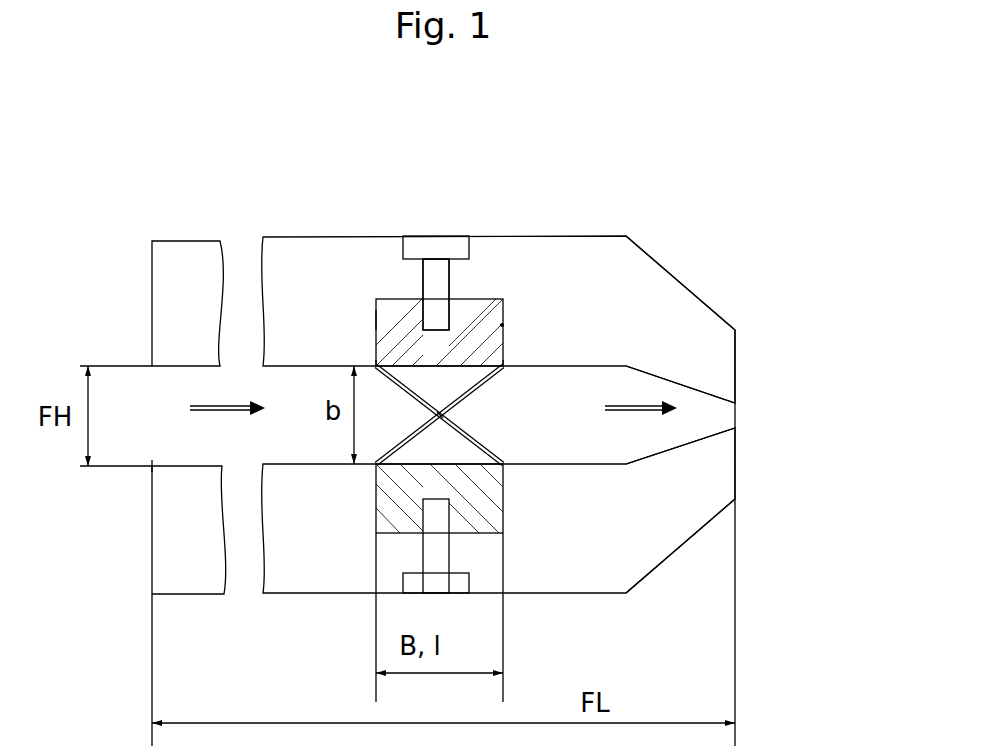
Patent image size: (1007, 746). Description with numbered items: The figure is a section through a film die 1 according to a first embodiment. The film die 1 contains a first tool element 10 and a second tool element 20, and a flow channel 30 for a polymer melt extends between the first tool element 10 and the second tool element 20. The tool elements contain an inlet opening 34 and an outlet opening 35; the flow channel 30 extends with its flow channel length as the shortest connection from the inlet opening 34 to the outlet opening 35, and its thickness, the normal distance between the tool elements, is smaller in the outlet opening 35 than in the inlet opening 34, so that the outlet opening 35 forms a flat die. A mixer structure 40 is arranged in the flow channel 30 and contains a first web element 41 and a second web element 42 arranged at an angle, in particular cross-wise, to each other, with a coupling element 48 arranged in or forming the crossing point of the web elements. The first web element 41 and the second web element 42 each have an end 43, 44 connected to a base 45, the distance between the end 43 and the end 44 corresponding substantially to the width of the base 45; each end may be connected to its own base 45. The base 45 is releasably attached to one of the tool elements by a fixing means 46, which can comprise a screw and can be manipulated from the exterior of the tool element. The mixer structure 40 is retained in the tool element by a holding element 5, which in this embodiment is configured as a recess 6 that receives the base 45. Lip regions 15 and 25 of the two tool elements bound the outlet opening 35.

The film die 1 is at (550, 383).
The holding element 5 is at (502, 325).
The recess 6 is at (376, 320).
The first tool element 10 is at (205, 262).
The upper die lip 15 is at (740, 373).
The second tool element 20 is at (300, 562).
The lower die lip 25 is at (738, 445).
The flow channel 30 is at (218, 445).
The inlet opening 34 is at (152, 466).
The outlet opening 35 is at (738, 413).
The mixer structure 40 is at (451, 226).
The first web element 41 is at (410, 397).
The second web element 42 is at (453, 410).
The end of first web element 43 is at (376, 366).
The end of second web element 44 is at (503, 366).
The base 45 is at (483, 328).
The fixing means 46 is at (433, 298).
The coupling element 48 is at (450, 430).